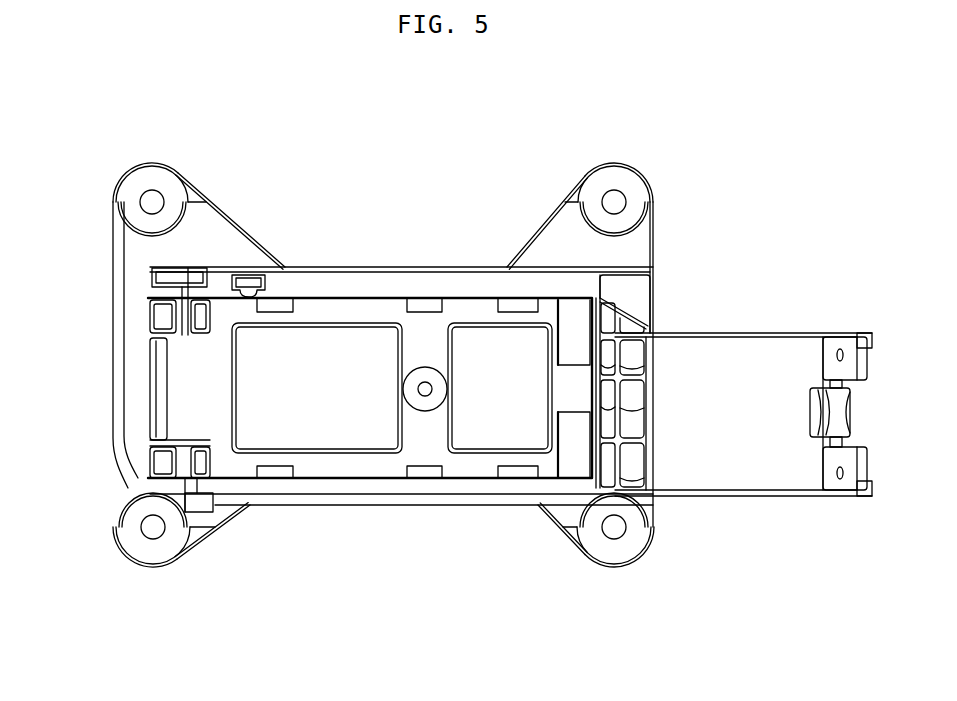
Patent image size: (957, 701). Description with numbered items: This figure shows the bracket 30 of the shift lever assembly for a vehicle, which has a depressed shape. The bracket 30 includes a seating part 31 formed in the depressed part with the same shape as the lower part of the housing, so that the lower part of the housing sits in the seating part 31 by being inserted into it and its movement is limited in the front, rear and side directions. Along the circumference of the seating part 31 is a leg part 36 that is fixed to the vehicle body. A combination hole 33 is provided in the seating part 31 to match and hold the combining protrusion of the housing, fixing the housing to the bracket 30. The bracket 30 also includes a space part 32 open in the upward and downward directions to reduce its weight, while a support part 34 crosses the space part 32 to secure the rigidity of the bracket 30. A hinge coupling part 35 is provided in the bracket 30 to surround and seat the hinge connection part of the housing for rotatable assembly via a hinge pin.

The bracket 30 is at (332, 183).
The seating part 31 is at (350, 465).
The space part 32 is at (287, 402).
The combination hole 33 is at (515, 305).
The support part 34 is at (425, 394).
The hinge coupling part 35 is at (165, 460).
The leg part 36 is at (152, 182).